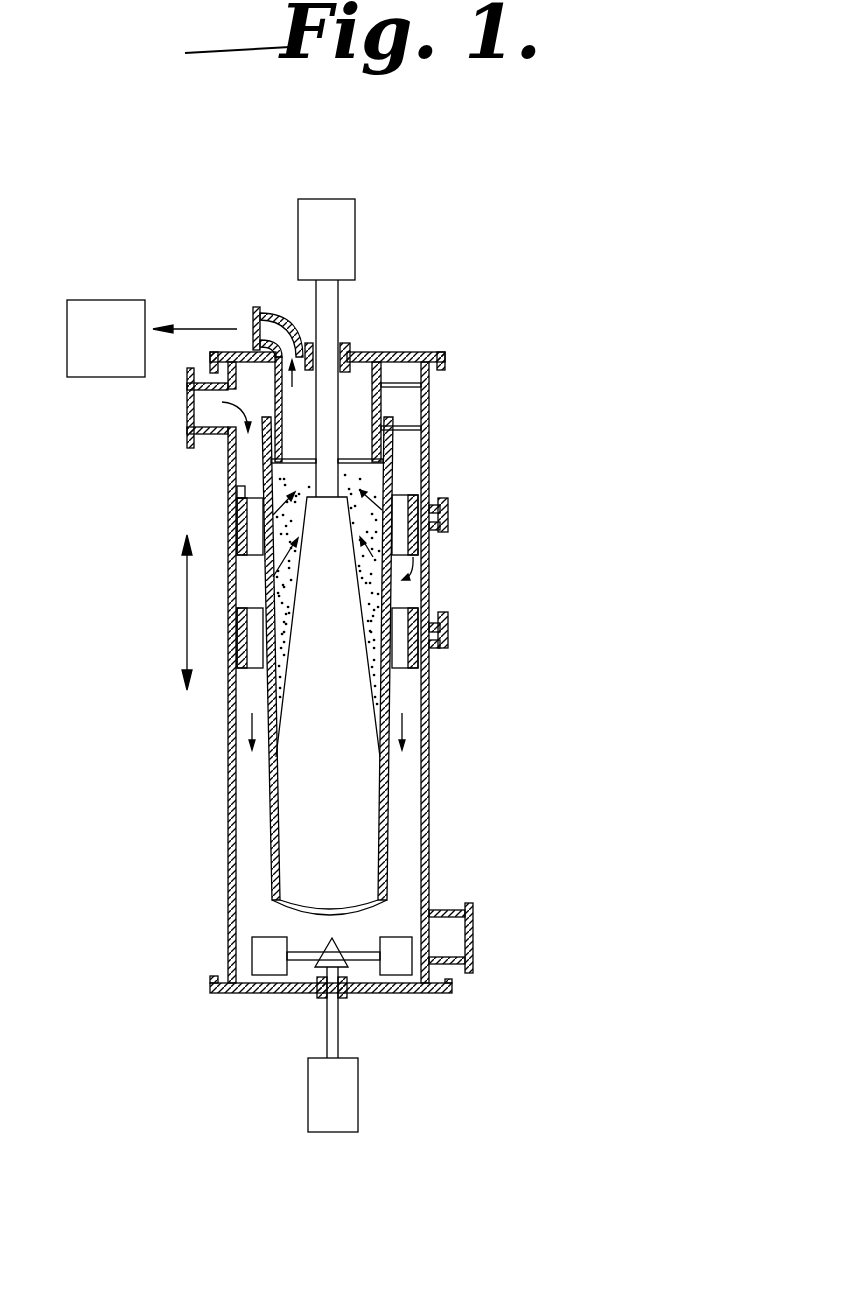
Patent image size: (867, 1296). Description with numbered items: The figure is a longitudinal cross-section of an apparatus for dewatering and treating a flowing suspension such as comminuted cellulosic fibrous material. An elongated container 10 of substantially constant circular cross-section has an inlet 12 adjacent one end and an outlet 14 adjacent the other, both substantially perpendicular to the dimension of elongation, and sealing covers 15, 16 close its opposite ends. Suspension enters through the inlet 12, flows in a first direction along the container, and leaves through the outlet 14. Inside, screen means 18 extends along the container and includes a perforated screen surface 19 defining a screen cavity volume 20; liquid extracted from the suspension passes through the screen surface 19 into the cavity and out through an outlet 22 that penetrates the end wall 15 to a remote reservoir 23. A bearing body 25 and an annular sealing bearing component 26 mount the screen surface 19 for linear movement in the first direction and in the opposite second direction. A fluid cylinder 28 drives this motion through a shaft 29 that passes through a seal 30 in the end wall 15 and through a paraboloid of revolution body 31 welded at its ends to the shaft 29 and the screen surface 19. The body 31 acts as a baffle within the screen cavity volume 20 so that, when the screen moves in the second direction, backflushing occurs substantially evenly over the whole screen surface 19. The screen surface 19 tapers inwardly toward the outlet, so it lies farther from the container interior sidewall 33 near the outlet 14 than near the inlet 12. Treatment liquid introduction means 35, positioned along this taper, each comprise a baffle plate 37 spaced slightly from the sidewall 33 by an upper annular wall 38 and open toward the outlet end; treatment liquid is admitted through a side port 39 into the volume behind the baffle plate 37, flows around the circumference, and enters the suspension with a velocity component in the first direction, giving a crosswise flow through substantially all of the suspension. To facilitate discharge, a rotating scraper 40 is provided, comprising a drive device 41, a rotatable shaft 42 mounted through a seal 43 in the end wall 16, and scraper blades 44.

The elongated container 10 is at (432, 757).
The inlet 12 is at (212, 432).
The outlet 14 is at (455, 908).
The sealing cover 15 is at (425, 352).
The sealing cover 16 is at (252, 993).
The screen means 18 is at (246, 802).
The perforated screen surface 19 is at (228, 583).
The screen cavity volume 20 is at (307, 487).
The outlet 22 is at (267, 313).
The reservoir 23 is at (145, 290).
The bearing body 25 is at (430, 387).
The annular sealing bearing component 26 is at (433, 429).
The fluid cylinder 28 is at (346, 212).
The shaft 29 is at (333, 295).
The seal 30 is at (348, 350).
The paraboloid of revolution body 31 is at (345, 622).
The container interior sidewall 33 is at (240, 893).
The treatment liquid introduction means 35 is at (458, 510).
The baffle plate 37 is at (255, 522).
The upper annular wall 38 is at (238, 494).
The side port 39 is at (448, 528).
The rotating scraper 40 is at (409, 1010).
The drive device 41 is at (348, 1110).
The rotatable shaft 42 is at (327, 1042).
The seal 43 is at (320, 1000).
The scraper blades 44 is at (307, 938).